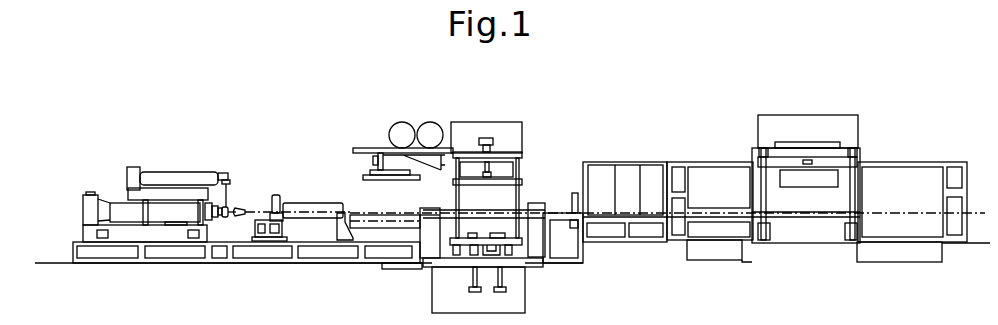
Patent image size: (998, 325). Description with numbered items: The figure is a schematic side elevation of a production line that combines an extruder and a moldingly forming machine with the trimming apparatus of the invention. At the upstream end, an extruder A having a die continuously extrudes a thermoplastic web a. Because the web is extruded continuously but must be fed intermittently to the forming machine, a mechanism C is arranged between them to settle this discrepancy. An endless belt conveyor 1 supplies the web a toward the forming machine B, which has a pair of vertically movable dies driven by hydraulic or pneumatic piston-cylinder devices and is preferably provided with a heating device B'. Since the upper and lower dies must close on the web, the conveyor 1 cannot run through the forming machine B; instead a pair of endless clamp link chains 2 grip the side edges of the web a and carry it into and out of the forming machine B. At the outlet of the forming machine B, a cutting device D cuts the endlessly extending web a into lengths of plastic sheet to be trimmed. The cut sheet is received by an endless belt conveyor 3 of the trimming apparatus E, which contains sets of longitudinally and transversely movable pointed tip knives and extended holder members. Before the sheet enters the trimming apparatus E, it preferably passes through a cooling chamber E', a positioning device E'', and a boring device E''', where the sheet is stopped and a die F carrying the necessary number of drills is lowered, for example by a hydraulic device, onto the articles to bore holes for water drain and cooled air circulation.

The extruder A is at (173, 165).
The thermoplastic web a is at (256, 208).
The mechanism C is at (302, 196).
The endless belt conveyor 1 is at (383, 224).
The endless clamp link chains 2 is at (448, 221).
The heating device B' is at (403, 134).
The forming machine B is at (489, 200).
The cutting device D is at (573, 186).
The cooling chamber E' is at (625, 181).
The endless belt conveyor 3 is at (632, 213).
The positioning device E'' is at (710, 190).
The boring device E''' is at (806, 155).
The die F is at (807, 177).
The trimming apparatus E is at (912, 175).